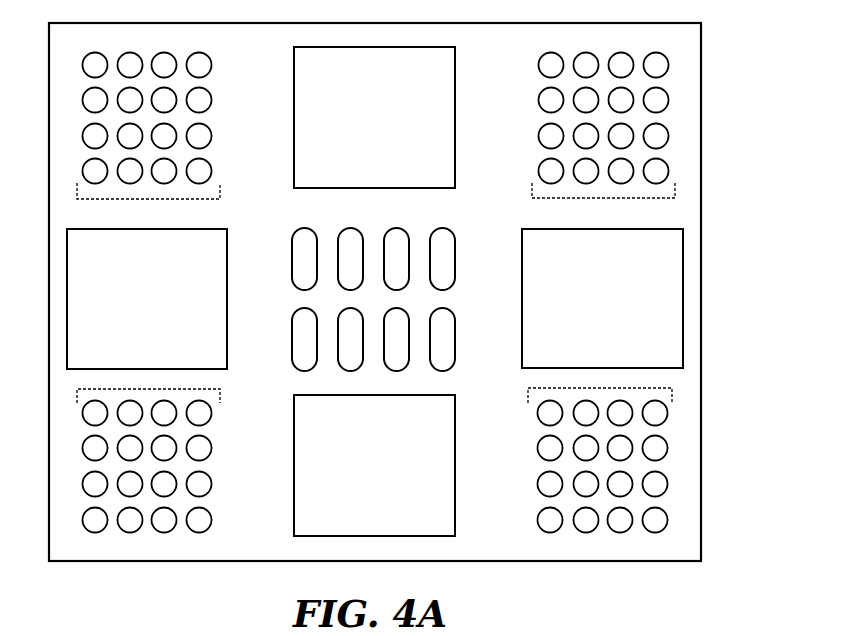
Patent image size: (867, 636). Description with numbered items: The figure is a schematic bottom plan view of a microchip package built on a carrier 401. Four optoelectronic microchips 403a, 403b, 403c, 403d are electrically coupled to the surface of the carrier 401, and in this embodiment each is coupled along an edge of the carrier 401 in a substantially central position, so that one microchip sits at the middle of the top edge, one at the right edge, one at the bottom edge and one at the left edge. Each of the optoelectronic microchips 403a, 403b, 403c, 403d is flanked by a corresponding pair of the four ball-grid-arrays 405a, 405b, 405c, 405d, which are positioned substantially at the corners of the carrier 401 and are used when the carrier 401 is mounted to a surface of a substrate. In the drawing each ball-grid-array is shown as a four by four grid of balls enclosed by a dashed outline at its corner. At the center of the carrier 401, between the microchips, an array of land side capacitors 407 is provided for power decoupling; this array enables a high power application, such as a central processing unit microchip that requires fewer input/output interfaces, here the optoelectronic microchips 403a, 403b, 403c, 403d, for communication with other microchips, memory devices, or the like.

The carrier 401 is at (703, 293).
The optoelectronic microchip 403a is at (350, 174).
The optoelectronic microchip 403b is at (578, 356).
The optoelectronic microchip 403c is at (350, 522).
The optoelectronic microchip 403d is at (123, 356).
The ball-grid-array 405a is at (210, 200).
The ball-grid-array 405b is at (545, 199).
The ball-grid-array 405c is at (542, 388).
The ball-grid-array 405d is at (208, 388).
The array of land side capacitors 407 is at (455, 265).